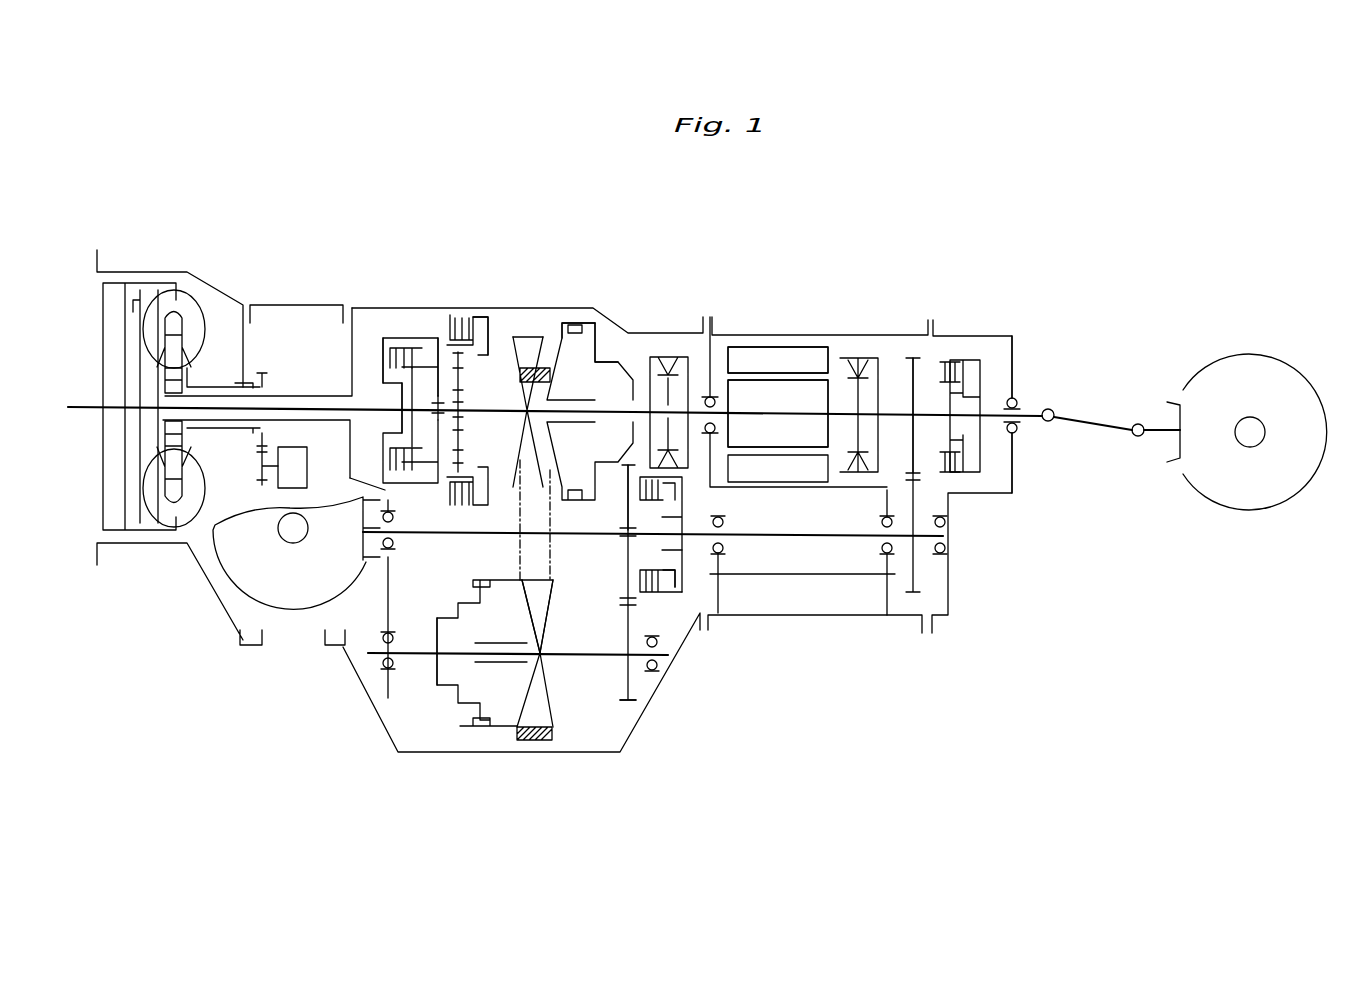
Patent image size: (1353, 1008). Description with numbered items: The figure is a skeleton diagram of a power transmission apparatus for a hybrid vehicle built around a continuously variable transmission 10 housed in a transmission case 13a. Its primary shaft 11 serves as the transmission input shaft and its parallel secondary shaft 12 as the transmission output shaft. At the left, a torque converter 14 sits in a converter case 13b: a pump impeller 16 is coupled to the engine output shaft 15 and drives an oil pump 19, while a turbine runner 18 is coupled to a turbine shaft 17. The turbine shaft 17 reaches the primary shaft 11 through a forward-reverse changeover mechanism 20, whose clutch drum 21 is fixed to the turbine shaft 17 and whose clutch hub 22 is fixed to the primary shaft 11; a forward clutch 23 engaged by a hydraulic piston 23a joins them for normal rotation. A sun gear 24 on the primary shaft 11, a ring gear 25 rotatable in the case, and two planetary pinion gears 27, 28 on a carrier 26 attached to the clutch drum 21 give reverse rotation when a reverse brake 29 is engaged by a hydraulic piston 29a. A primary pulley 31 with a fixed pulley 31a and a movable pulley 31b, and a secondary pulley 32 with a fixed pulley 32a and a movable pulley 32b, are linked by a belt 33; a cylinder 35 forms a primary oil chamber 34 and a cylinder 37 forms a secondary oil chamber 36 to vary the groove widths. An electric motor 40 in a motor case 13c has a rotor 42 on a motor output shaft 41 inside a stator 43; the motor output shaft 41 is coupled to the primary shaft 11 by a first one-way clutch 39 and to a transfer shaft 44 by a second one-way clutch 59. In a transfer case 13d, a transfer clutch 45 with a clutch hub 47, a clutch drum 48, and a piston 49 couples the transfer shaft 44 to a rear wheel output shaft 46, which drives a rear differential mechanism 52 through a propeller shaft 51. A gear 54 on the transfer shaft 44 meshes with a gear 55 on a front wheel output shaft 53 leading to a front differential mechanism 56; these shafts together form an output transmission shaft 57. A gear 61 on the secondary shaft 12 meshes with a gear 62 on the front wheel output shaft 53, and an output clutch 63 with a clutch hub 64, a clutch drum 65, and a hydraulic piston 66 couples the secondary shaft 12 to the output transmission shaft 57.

The continuously variable transmission 10 is at (602, 338).
The primary shaft 11 is at (650, 410).
The secondary shaft 12 is at (590, 665).
The transmission case 13a is at (590, 308).
The converter case 13b is at (212, 288).
The motor case 13c is at (800, 334).
The transfer case 13d is at (1003, 336).
The torque converter 14 is at (148, 532).
The engine output shaft 15 is at (103, 398).
The pump impeller 16 is at (193, 312).
The turbine shaft 17 is at (288, 404).
The turbine runner 18 is at (152, 305).
The oil pump 19 is at (291, 489).
The forward-reverse changeover mechanism 20 is at (398, 300).
The clutch drum 21 is at (412, 346).
The clutch hub 22 is at (381, 387).
The forward clutch 23 is at (388, 462).
The hydraulic piston 23a is at (385, 338).
The sun gear 24 is at (464, 397).
The ring gear 25 is at (438, 345).
The carrier 26 is at (436, 432).
The planetary pinion gear 27 is at (464, 360).
The planetary pinion gear 28 is at (464, 453).
The reverse brake 29 is at (462, 314).
The hydraulic piston 29a is at (489, 335).
The primary pulley 31 is at (531, 365).
The fixed pulley 31a is at (514, 335).
The movable pulley 31b is at (552, 431).
The secondary pulley 32 is at (556, 700).
The fixed pulley 32a is at (560, 674).
The movable pulley 32b is at (517, 700).
The belt 33 is at (530, 741).
The primary oil chamber 34 is at (625, 478).
The cylinder 35 is at (618, 356).
The secondary oil chamber 36 is at (467, 690).
The cylinder 37 is at (440, 695).
The first one-way clutch 39 is at (669, 356).
The electric motor 40 is at (768, 342).
The motor output shaft 41 is at (711, 360).
The rotor 42 is at (750, 398).
The stator 43 is at (800, 355).
The transfer shaft 44 is at (910, 412).
The transfer clutch 45 is at (991, 484).
The rear wheel output shaft 46 is at (1016, 398).
The clutch hub 47 is at (1017, 432).
The clutch drum 48 is at (950, 358).
The piston 49 is at (978, 360).
The propeller shaft 51 is at (1092, 421).
The rear differential mechanism 52 is at (1228, 482).
The front wheel output shaft 53 is at (884, 578).
The gear 54 is at (918, 345).
The gear 55 is at (948, 576).
The front differential mechanism 56 is at (271, 580).
The output transmission shaft 57 is at (792, 576).
The second one-way clutch 59 is at (858, 357).
The gear 61 is at (636, 704).
The gear 62 is at (622, 584).
The output clutch 63 is at (658, 671).
The clutch hub 64 is at (638, 552).
The clutch drum 65 is at (665, 610).
The hydraulic piston 66 is at (683, 493).